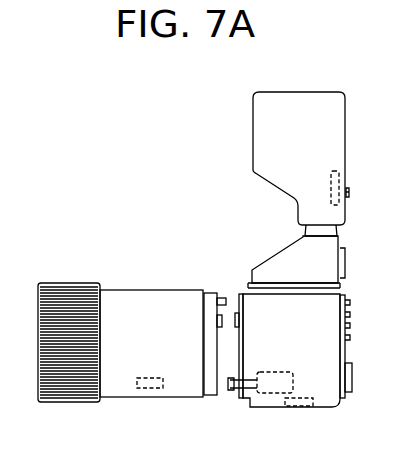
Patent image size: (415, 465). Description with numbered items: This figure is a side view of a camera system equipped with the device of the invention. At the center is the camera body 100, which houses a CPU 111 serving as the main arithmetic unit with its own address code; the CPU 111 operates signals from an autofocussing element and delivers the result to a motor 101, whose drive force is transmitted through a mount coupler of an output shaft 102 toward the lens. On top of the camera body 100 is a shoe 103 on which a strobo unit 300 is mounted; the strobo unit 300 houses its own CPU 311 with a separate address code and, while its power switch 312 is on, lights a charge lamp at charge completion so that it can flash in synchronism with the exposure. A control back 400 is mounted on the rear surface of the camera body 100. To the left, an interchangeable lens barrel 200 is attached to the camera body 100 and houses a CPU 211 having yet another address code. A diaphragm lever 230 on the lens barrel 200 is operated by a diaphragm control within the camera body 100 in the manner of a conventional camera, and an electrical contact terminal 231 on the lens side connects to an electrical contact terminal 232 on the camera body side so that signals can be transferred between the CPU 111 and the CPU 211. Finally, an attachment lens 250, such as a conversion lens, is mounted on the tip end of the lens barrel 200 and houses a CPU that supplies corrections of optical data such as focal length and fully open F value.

The camera body 100 is at (328, 400).
The motor 101 is at (262, 372).
The output shaft 102 is at (231, 390).
The shoe 103 is at (338, 230).
The CPU 111 is at (296, 407).
The interchangeable lens barrel 200 is at (143, 300).
The CPU 211 is at (146, 391).
The diaphragm lever 230 is at (222, 295).
The electrical contact terminal 231 is at (216, 322).
The electrical contact terminal 232 is at (242, 320).
The attachment lens 250 is at (68, 290).
The strobo unit 300 is at (324, 99).
The CPU 311 is at (340, 171).
The power switch 312 is at (350, 192).
The control back 400 is at (346, 296).